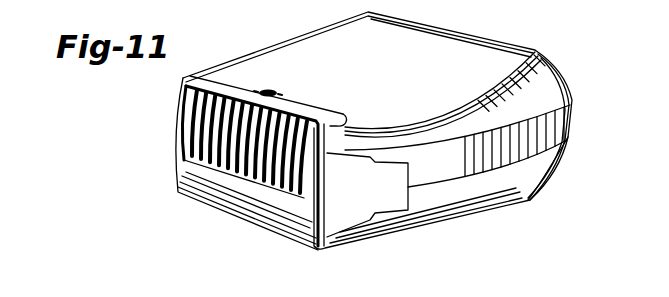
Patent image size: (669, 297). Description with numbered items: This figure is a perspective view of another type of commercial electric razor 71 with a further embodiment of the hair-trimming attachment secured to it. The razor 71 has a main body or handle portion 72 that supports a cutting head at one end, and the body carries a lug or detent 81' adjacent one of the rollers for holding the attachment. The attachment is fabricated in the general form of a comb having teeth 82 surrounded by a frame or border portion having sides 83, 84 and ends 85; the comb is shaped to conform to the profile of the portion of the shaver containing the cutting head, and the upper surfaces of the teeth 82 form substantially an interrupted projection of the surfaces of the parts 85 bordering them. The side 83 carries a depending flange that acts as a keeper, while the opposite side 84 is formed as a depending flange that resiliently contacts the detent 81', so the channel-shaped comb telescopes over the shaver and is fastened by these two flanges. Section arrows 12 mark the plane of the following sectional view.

The electric razor 71 is at (566, 165).
The main body or handle portion 72 is at (420, 80).
The side of the frame portion 84 is at (322, 111).
The lug or detent 81' is at (289, 86).
The ends of the frame portion 85 is at (173, 128).
The comb teeth 82 is at (190, 152).
The side of the frame portion 83 is at (227, 187).
The section line 12 is at (247, 61).